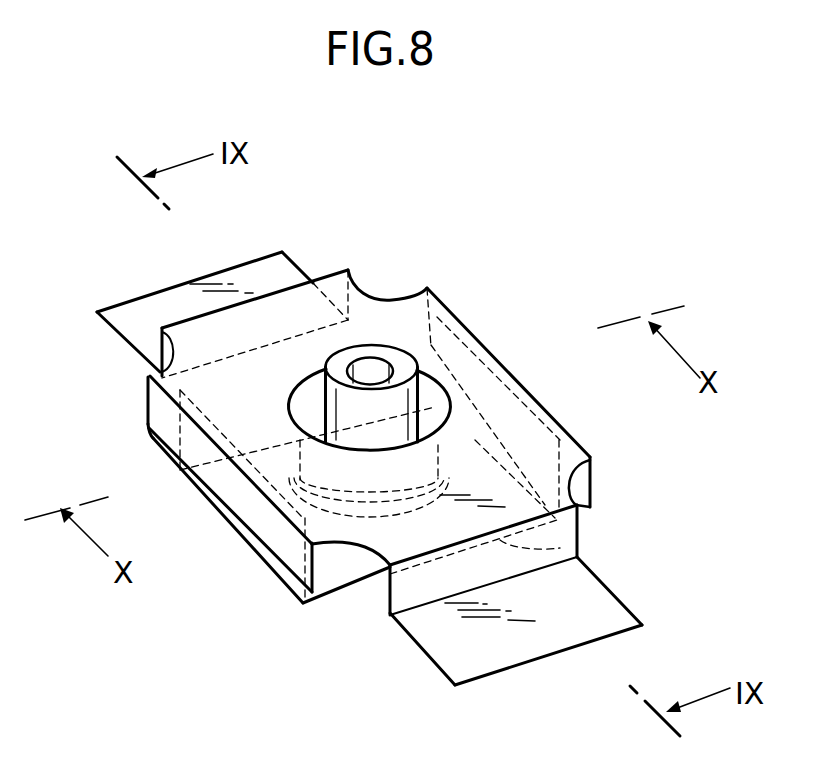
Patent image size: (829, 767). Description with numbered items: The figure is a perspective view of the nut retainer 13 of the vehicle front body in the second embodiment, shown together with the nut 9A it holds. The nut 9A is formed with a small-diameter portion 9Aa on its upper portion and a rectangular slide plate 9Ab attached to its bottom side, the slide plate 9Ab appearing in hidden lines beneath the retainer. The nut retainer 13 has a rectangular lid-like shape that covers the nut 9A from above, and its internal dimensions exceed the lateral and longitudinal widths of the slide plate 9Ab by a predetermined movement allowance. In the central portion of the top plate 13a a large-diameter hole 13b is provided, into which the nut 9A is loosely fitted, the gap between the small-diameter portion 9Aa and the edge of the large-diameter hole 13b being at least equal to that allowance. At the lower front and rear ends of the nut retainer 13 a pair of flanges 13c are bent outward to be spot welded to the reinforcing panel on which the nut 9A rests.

The nut 9A is at (343, 445).
The small-diameter portion 9Aa is at (326, 371).
The slide plate 9Ab is at (578, 540).
The nut retainer 13 is at (452, 297).
The top plate 13a is at (396, 327).
The large-diameter hole 13b is at (433, 438).
The flanges 13c is at (141, 320).